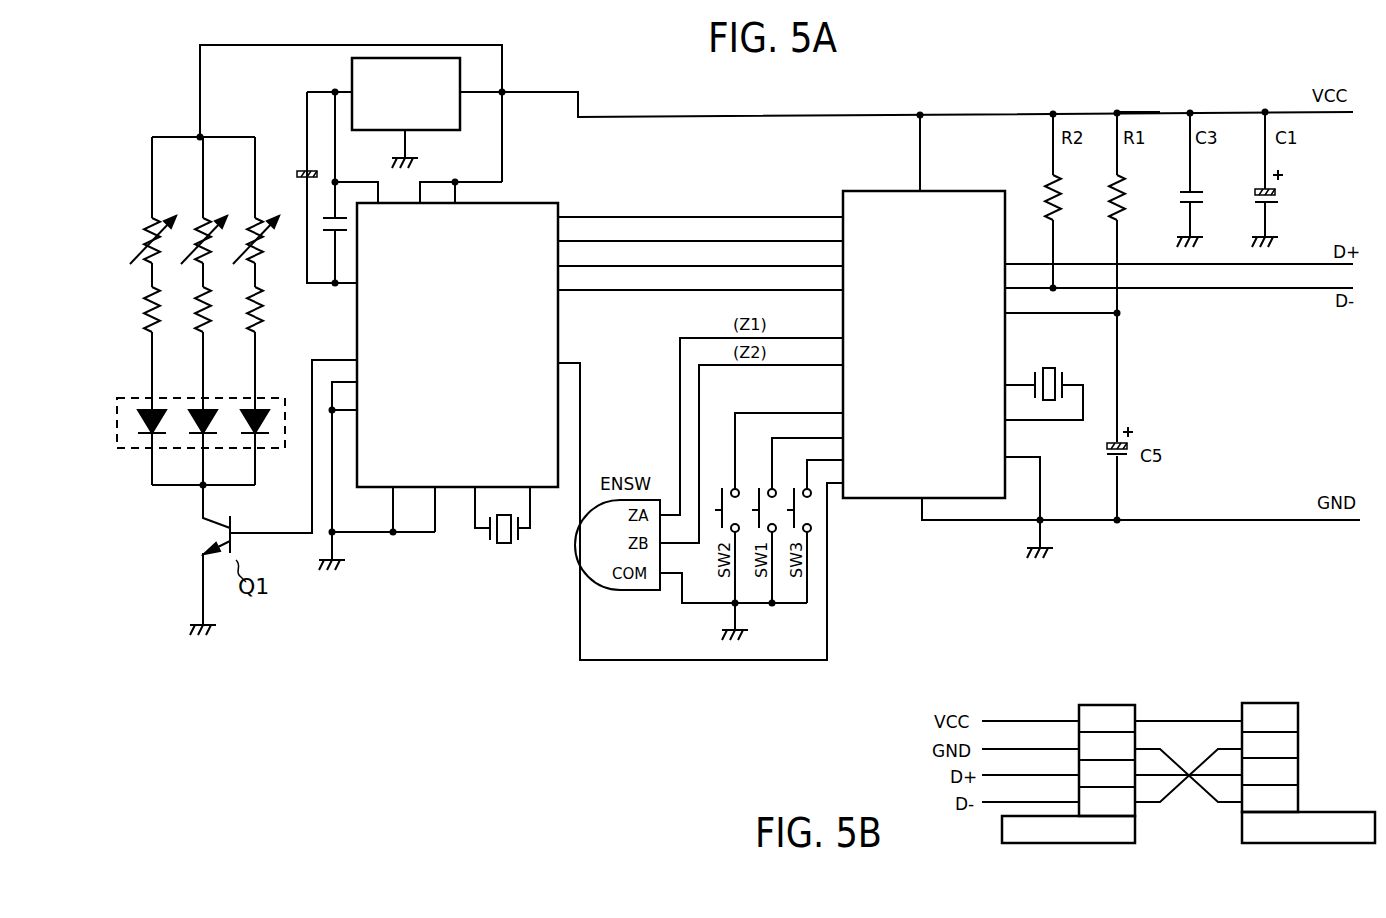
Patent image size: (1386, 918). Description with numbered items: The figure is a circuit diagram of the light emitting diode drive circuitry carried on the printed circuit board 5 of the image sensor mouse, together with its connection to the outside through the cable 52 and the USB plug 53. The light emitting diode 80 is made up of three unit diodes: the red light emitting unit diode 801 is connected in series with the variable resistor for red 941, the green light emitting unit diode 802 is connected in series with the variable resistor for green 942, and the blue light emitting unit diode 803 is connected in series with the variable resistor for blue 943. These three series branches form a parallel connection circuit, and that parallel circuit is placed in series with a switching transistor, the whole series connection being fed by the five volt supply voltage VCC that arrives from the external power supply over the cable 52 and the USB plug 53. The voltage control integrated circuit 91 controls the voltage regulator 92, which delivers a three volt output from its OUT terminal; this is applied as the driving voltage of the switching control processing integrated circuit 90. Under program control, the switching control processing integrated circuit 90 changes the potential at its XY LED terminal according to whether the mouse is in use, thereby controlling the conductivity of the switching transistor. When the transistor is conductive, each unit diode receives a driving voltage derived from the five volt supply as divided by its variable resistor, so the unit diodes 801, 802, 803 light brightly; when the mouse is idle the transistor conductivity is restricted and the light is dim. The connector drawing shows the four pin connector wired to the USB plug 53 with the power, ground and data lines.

In FIG. 5A, the printed circuit board 5 is at (1140, 106).
In FIG. 5A, the light emitting diode 80 is at (202, 432).
In FIG. 5A, the red light emitting unit diode 801 is at (150, 408).
In FIG. 5A, the green light emitting unit diode 802 is at (201, 408).
In FIG. 5A, the blue light emitting unit diode 803 is at (253, 408).
In FIG. 5A, the switching control processing integrated circuit 90 is at (460, 490).
In FIG. 5A, the voltage control integrated circuit 91 is at (872, 190).
In FIG. 5A, the voltage regulator 92 is at (462, 74).
In FIG. 5A, the variable resistor for red 941 is at (150, 216).
In FIG. 5A, the variable resistor for green 942 is at (201, 216).
In FIG. 5A, the variable resistor for blue 943 is at (253, 216).
In FIG. 5B, the cable 52 is at (1026, 714).
In FIG. 5B, the USB plug 53 is at (1211, 712).